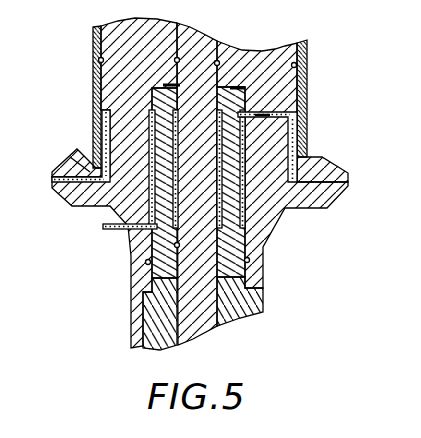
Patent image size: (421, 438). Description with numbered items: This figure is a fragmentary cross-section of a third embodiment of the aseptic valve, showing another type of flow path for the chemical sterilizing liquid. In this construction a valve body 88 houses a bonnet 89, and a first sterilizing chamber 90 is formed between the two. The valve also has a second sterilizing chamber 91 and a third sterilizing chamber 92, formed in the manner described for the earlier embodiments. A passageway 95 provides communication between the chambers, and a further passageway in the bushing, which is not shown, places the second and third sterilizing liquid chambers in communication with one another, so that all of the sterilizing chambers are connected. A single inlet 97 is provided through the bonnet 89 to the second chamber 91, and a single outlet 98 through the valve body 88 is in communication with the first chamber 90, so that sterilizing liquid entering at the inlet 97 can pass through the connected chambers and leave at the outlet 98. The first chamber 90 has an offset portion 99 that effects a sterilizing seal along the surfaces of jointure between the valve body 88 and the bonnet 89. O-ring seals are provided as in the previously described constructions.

The valve body 88 is at (300, 78).
The bonnet 89 is at (284, 45).
The sterilizing chamber 90 is at (292, 147).
The second sterilizing chamber 91 is at (155, 122).
The third sterilizing chamber 92 is at (173, 226).
The passageway 95 is at (273, 111).
The inlet 97 is at (97, 225).
The outlet 98 is at (73, 146).
The offset portion 99 is at (300, 174).